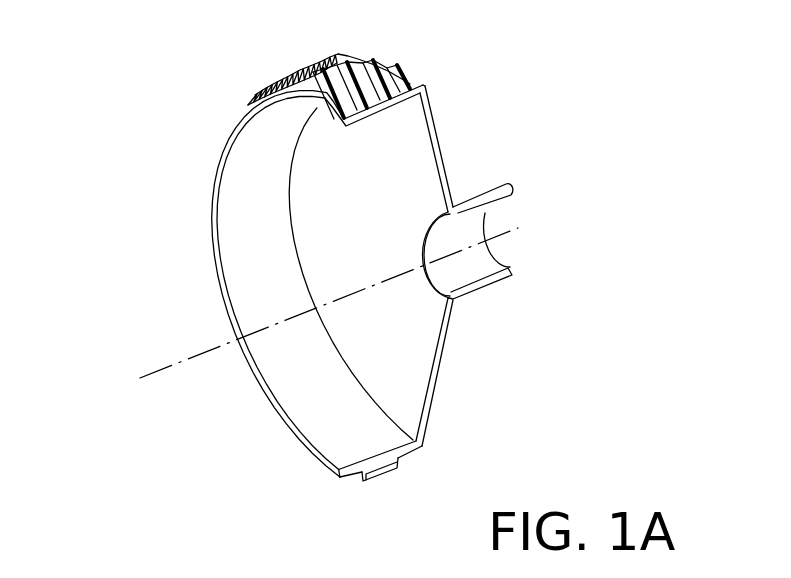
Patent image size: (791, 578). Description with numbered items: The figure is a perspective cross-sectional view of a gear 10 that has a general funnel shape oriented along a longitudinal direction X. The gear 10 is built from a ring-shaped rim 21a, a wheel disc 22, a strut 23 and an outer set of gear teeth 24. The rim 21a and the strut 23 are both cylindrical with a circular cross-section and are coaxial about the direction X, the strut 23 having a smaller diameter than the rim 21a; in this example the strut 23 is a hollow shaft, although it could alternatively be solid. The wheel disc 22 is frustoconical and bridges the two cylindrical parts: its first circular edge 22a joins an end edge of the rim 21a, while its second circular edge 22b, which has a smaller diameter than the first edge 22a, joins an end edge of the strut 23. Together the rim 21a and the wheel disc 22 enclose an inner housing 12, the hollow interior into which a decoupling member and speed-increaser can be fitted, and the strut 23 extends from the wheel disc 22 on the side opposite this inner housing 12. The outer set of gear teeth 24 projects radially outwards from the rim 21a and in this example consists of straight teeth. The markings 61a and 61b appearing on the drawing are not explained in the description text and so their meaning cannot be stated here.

The gear 10 is at (320, 284).
The inner housing 12 is at (348, 334).
The ring-shaped rim 21a is at (308, 452).
The wheel disc 22 is at (446, 353).
The first circular edge 22a is at (427, 88).
The second circular edge 22b is at (458, 200).
The strut 23 is at (484, 282).
The outer set of gear teeth 24 is at (378, 481).
The gear teeth 61a is at (410, 76).
The gear teeth (fan portion) 61b is at (224, 183).
The longitudinal direction X is at (160, 370).